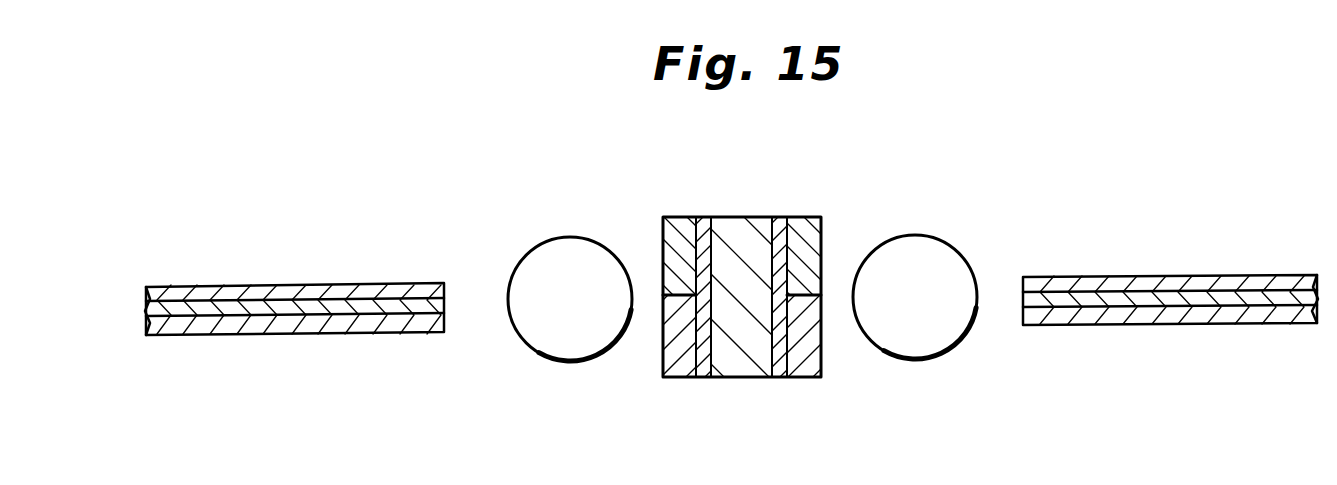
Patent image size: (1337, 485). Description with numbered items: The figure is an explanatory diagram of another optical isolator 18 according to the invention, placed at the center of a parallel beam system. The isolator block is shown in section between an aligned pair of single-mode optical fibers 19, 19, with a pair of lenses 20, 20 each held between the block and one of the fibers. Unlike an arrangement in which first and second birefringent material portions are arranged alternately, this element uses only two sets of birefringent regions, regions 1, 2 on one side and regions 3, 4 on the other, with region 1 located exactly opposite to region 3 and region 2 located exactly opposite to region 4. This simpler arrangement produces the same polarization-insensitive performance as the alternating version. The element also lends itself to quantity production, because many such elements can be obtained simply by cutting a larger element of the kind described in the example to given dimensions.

The first birefringent material region 1 is at (680, 233).
The second birefringent material region 2 is at (680, 364).
The first birefringent material region 3 is at (805, 232).
The second birefringent material region 4 is at (815, 352).
The optical isolator 18 is at (741, 205).
The single-mode optical fiber 19 is at (360, 302).
The lens 20 is at (558, 262).